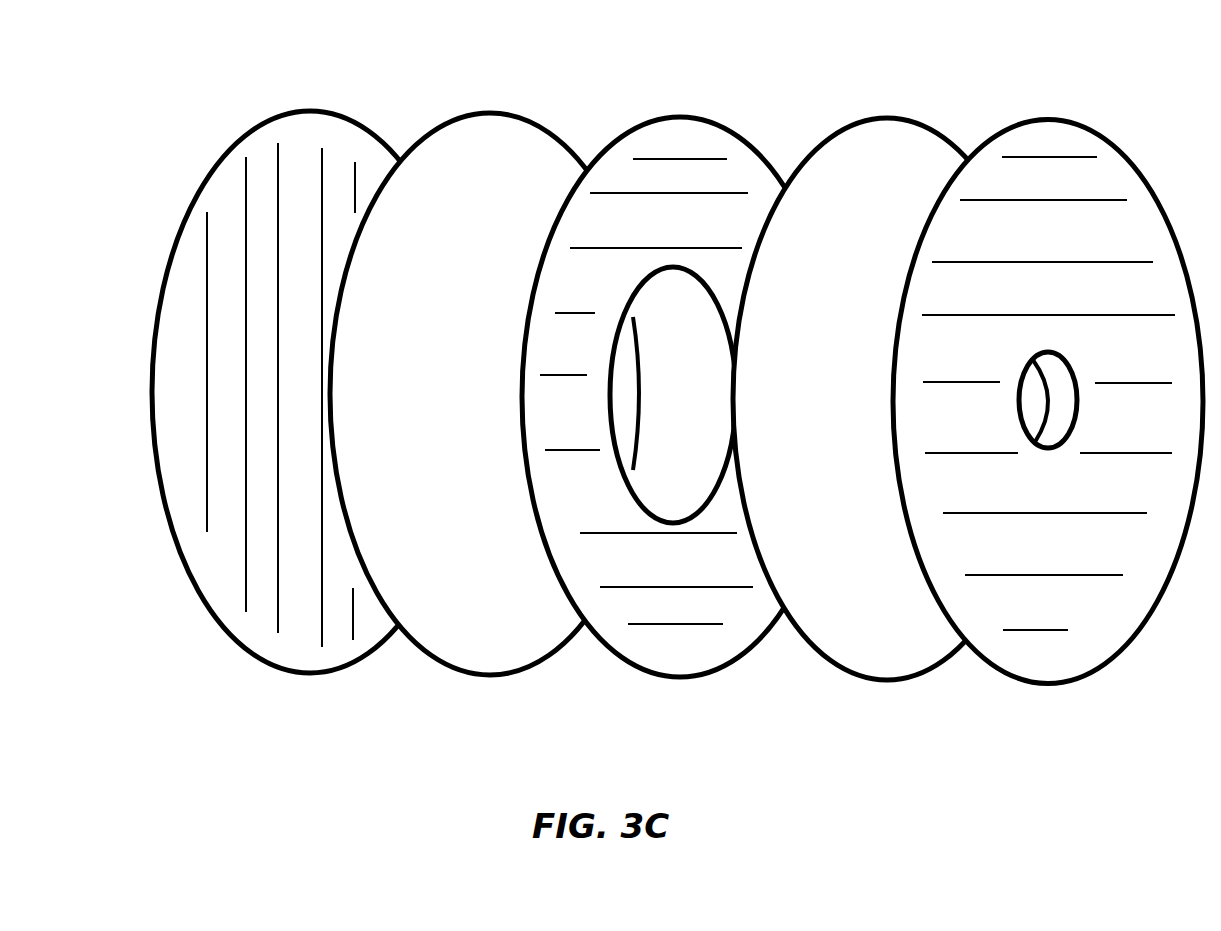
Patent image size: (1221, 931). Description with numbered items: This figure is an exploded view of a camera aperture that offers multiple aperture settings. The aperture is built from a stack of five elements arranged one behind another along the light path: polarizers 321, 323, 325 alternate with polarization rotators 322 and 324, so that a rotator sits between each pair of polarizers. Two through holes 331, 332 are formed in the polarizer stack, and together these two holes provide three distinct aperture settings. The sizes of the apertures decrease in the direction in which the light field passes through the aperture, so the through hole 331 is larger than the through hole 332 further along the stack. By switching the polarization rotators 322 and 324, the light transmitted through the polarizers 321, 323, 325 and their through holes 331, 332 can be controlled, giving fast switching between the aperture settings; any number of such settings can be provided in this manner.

The polarizer 321 is at (277, 110).
The polarization rotator 322 is at (418, 138).
The polarizer 323 is at (622, 127).
The polarization rotator 324 is at (847, 123).
The polarizer 325 is at (1024, 120).
The through hole 331 is at (653, 273).
The through hole 332 is at (1038, 350).